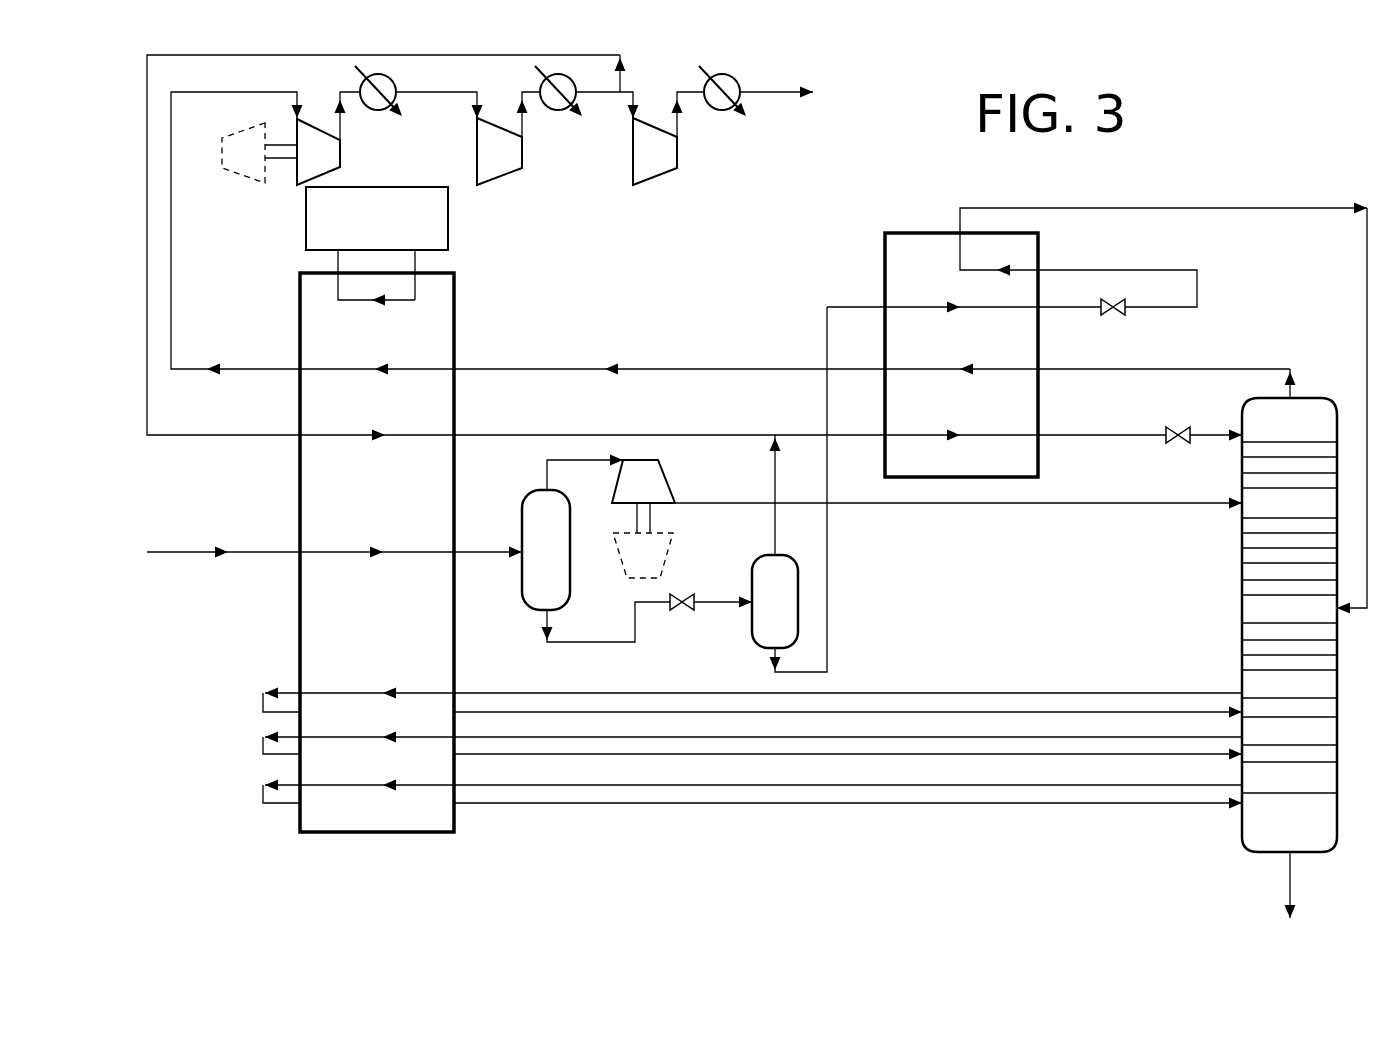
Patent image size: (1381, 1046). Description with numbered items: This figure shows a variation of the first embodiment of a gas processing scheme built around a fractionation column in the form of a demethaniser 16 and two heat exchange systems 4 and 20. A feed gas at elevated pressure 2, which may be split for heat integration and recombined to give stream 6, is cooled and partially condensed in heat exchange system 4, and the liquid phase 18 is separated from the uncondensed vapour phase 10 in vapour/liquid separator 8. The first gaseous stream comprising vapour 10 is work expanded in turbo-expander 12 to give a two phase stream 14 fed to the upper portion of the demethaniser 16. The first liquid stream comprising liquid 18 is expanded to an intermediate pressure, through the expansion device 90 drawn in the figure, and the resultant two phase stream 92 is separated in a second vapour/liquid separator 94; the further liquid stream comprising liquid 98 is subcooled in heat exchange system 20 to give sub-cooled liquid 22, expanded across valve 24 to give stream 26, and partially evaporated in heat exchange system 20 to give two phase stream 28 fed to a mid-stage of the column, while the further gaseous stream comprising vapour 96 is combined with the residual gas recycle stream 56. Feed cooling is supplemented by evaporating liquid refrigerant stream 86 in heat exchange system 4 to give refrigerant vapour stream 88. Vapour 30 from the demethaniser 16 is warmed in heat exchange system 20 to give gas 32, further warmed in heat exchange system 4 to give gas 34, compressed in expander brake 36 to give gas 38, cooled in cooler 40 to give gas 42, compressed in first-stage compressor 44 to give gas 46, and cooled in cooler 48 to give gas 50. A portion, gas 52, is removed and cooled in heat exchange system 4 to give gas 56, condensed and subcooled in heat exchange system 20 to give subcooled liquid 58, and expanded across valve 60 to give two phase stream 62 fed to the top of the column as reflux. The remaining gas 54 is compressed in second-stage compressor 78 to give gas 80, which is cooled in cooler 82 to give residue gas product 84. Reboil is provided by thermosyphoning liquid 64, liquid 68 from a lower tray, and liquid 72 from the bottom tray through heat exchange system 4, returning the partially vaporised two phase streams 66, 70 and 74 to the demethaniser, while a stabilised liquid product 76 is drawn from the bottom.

The feed gas 2 is at (192, 553).
The heat exchange system 4 is at (380, 833).
The recombined feed stream 6 is at (485, 551).
The vapour/liquid separator 8 is at (522, 590).
The vapour phase 10 is at (547, 470).
The turbo-expander 12 is at (218, 153).
The two phase stream 14 is at (700, 502).
The demethaniser 16 is at (1242, 600).
The liquid phase 18 is at (615, 644).
The heat exchange system 20 is at (885, 266).
The sub-cooled liquid 22 is at (1063, 308).
The valve 24 is at (1112, 315).
The expanded stream 26 is at (1153, 270).
The two phase stream 28 is at (1367, 266).
The vapour 30 is at (1292, 388).
The gas 32 is at (543, 368).
The gas 34 is at (222, 368).
The expander brake 36 is at (295, 172).
The gas 38 is at (337, 117).
The cooler 40 is at (378, 110).
The gas 42 is at (437, 93).
The 1st stage compressor 44 is at (500, 180).
The gas 46 is at (524, 118).
The cooler 48 is at (560, 112).
The gas 50 is at (603, 93).
The gas 52 is at (238, 436).
The gas 54 is at (635, 92).
The gas 56 is at (699, 434).
The subcooled liquid 58 is at (1108, 434).
The valve 60 is at (1178, 427).
The two phase stream 62 is at (1216, 434).
The liquid 64 is at (965, 692).
The two phase stream 66 is at (265, 702).
The liquid 68 is at (1020, 754).
The two phase stream 70 is at (265, 746).
The liquid 72 is at (965, 785).
The two phase stream 74 is at (265, 795).
The stabilised liquid product 76 is at (1290, 885).
The 2nd stage compressor 78 is at (660, 180).
The gas 80 is at (695, 93).
The cooler 82 is at (732, 75).
The residue gas product 84 is at (787, 93).
The liquid refrigerant stream 86 is at (415, 258).
The refrigerant vapour stream 88 is at (338, 258).
The valve 90 is at (682, 610).
The two phase stream 92 is at (730, 603).
The second vapour/liquid separator 94 is at (752, 578).
The vapour 96 is at (775, 535).
The liquid 98 is at (827, 555).